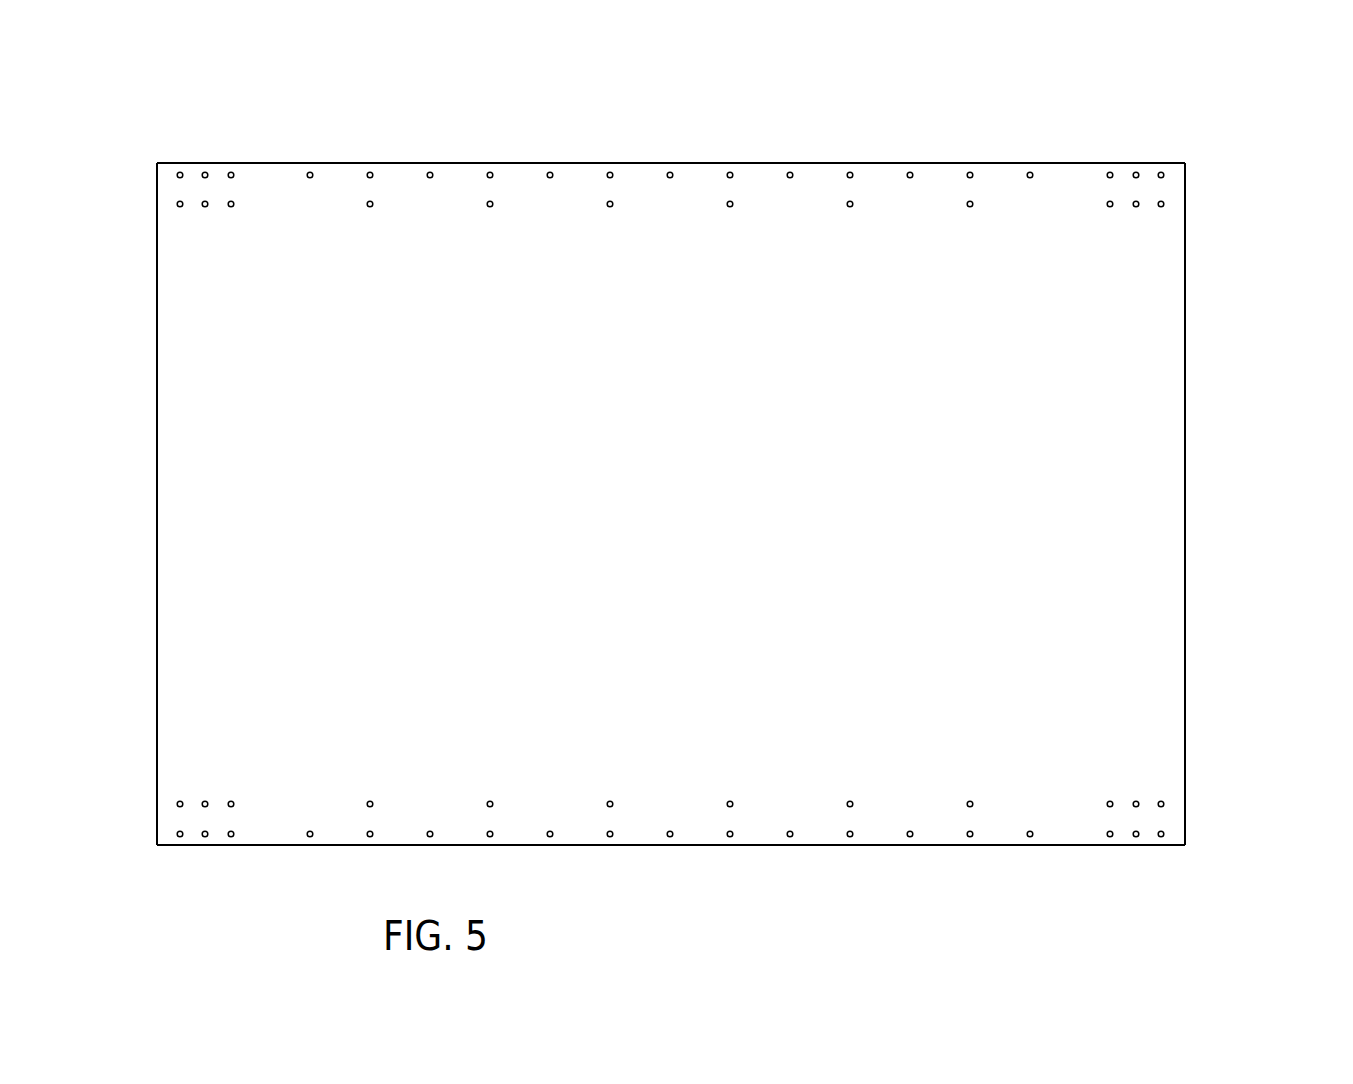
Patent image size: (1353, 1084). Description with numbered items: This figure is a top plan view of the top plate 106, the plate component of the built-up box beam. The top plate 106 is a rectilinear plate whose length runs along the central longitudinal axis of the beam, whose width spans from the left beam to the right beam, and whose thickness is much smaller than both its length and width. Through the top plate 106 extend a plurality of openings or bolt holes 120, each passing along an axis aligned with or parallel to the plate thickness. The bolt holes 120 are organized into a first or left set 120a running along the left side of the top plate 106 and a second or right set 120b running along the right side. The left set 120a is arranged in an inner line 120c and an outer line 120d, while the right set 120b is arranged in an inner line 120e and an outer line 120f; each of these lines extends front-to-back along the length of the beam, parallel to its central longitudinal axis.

The top plate 106 is at (196, 116).
The bolt holes 120 is at (788, 172).
The left set of bolt holes 120a is at (1133, 241).
The right set of bolt holes 120b is at (1133, 769).
The inner line of bolt holes 120c is at (1180, 204).
The outer line of bolt holes 120d is at (1180, 175).
The inner line of bolt holes 120e is at (1180, 804).
The outer line of bolt holes 120f is at (1180, 834).